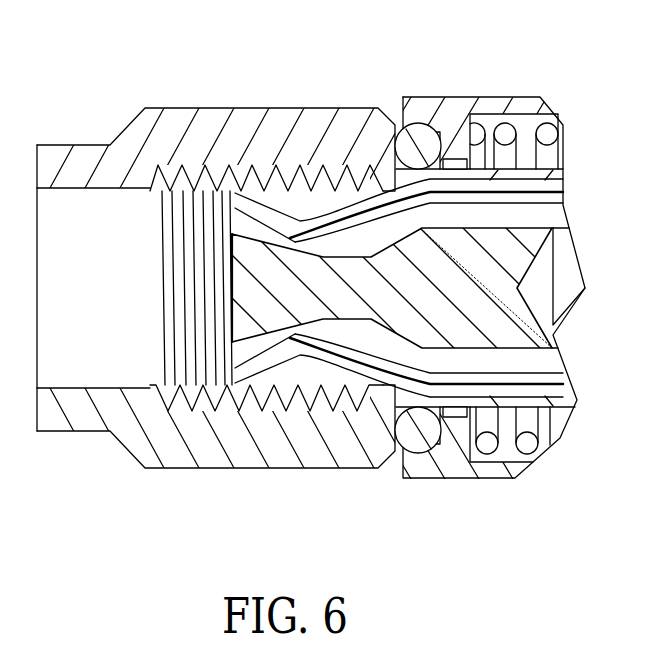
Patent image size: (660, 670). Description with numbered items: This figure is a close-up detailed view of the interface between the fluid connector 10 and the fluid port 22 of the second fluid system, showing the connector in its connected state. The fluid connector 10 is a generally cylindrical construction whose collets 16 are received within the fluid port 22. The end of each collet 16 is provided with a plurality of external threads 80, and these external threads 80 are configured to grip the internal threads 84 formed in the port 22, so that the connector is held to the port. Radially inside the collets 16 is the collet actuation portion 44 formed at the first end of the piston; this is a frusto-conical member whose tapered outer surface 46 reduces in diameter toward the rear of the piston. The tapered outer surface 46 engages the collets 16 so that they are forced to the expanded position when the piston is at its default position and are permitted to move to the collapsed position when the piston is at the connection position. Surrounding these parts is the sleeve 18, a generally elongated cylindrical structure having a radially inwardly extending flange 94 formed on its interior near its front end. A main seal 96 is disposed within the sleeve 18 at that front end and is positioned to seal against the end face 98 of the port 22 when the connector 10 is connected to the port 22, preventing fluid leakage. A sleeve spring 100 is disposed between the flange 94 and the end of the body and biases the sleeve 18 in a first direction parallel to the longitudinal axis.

The fluid connector 10 is at (552, 495).
The collets 16 is at (288, 226).
The sleeve 18 is at (489, 84).
The fluid port 22 is at (240, 93).
The collet actuation portion 44 is at (257, 307).
The tapered outer surface 46 is at (262, 236).
The external threads 80 is at (248, 195).
The internal threads 84 is at (172, 354).
The flange 94 is at (462, 136).
The main seal 96 is at (420, 140).
The end face 98 is at (410, 453).
The sleeve spring 100 is at (506, 134).